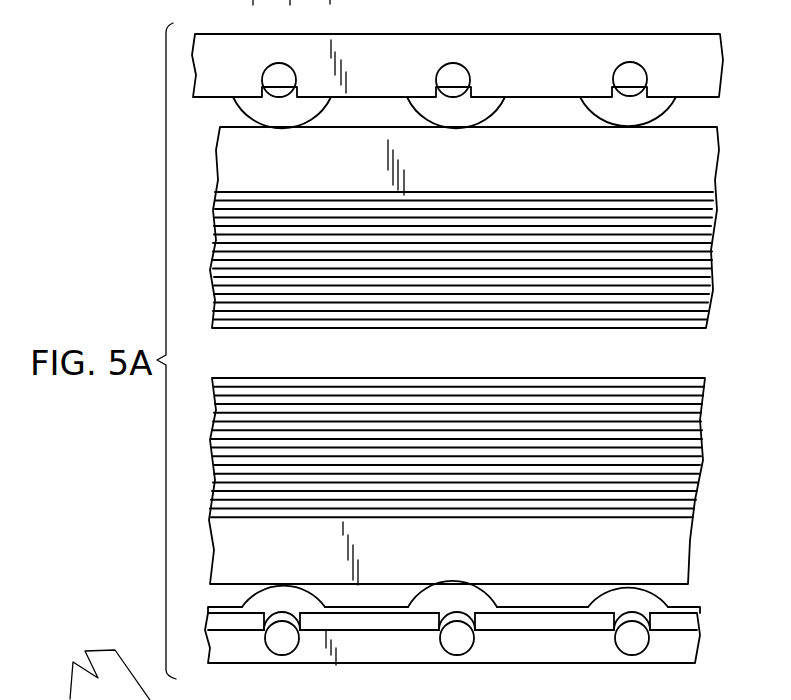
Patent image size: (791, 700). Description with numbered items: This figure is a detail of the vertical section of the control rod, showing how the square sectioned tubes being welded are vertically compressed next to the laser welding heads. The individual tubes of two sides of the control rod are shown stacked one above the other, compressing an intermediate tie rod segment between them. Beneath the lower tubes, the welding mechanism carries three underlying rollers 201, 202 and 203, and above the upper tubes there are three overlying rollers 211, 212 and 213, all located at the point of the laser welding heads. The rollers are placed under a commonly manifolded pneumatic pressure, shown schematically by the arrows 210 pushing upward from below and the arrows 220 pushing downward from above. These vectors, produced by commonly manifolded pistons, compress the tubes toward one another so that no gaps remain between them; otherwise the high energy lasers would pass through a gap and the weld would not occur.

The underlying roller 201 is at (254, 587).
The underlying roller 202 is at (433, 587).
The underlying roller 203 is at (605, 585).
The arrows 210 is at (293, 671).
The overlying roller 211 is at (236, 102).
The overlying roller 212 is at (412, 101).
The overlying roller 213 is at (590, 111).
The arrows 220 is at (389, 8).